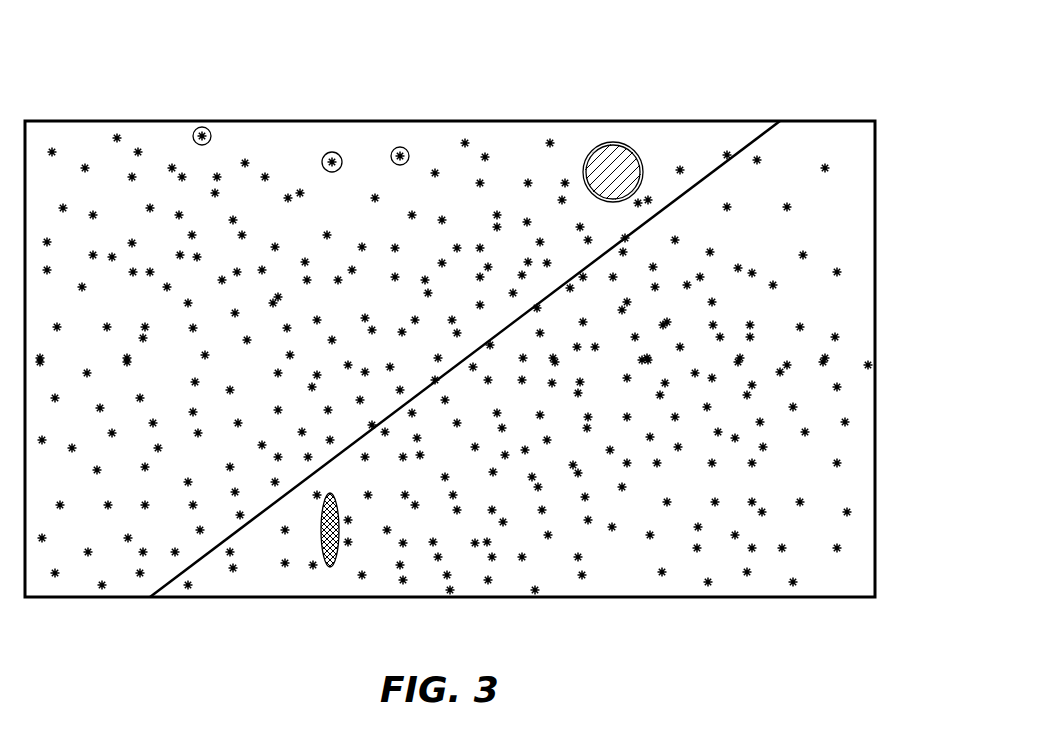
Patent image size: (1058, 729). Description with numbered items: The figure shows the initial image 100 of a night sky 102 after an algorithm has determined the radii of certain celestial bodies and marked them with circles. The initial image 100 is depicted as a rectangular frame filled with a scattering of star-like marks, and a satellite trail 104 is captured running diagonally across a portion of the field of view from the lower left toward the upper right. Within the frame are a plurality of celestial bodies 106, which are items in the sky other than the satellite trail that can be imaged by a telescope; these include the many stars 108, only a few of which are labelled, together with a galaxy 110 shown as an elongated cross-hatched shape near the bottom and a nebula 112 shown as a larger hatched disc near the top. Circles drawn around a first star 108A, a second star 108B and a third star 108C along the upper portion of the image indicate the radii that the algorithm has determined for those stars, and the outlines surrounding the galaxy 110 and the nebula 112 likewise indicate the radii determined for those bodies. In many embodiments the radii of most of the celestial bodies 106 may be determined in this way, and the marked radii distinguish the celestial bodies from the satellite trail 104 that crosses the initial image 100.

The initial image 100 is at (653, 61).
The night sky 102 is at (608, 563).
The satellite trail 104 is at (760, 132).
The celestial bodies 106 is at (788, 147).
The stars 108 is at (117, 133).
The first star 108A is at (202, 127).
The second star 108B is at (333, 152).
The third star 108C is at (403, 147).
The galaxy 110 is at (330, 568).
The nebula 112 is at (608, 142).